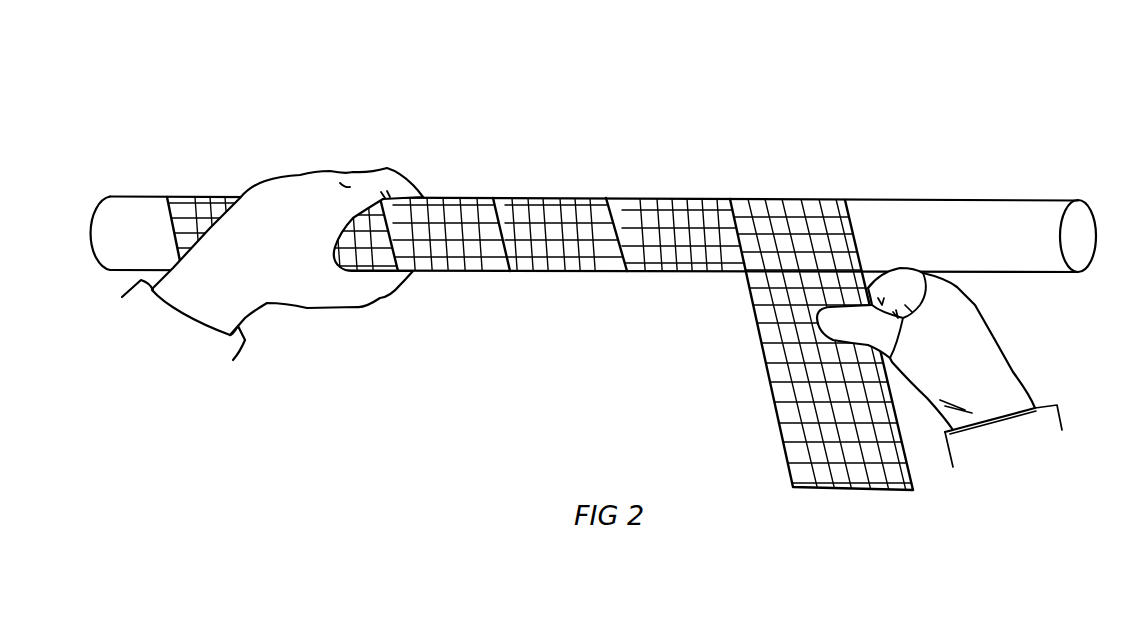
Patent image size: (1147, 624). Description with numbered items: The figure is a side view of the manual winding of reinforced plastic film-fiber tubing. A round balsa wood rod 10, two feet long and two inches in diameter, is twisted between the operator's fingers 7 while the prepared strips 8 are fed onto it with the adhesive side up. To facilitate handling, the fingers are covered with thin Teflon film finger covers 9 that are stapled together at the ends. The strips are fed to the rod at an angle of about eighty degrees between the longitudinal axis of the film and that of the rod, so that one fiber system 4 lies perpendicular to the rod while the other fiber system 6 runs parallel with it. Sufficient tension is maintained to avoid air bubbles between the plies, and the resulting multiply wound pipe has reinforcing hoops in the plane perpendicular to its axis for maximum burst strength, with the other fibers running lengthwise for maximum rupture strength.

The fiber system 4 is at (670, 233).
The fiber system 6 is at (792, 242).
The fingers 7 is at (420, 196).
The strips 8 is at (656, 272).
The Teflon film finger covers 9 is at (912, 270).
The round balsa wood rod 10 is at (902, 200).